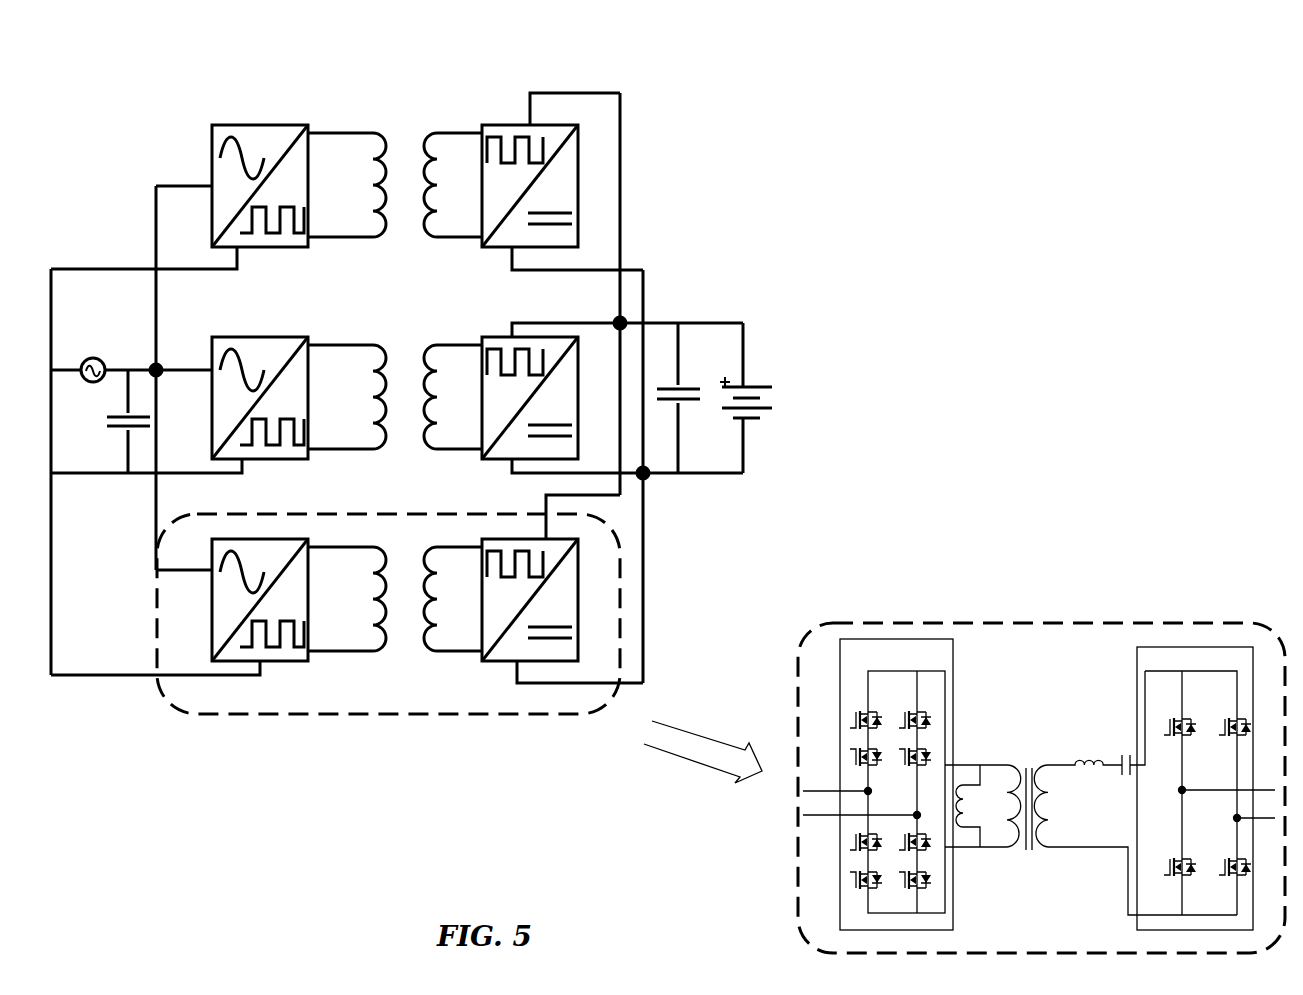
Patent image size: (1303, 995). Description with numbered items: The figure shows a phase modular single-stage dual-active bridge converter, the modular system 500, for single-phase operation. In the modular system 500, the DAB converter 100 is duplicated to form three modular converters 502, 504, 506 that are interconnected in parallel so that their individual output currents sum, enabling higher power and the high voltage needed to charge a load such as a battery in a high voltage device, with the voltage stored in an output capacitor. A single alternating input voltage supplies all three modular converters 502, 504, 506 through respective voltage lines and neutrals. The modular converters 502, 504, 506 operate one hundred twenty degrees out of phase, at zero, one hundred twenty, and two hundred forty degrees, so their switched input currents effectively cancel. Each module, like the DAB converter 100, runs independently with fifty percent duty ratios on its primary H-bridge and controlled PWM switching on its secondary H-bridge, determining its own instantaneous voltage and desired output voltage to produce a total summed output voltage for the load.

The DAB converter 100 is at (1055, 623).
The modular system 500 is at (629, 378).
The modular converter 502 is at (393, 157).
The modular converter 504 is at (403, 349).
The modular converter 506 is at (403, 604).